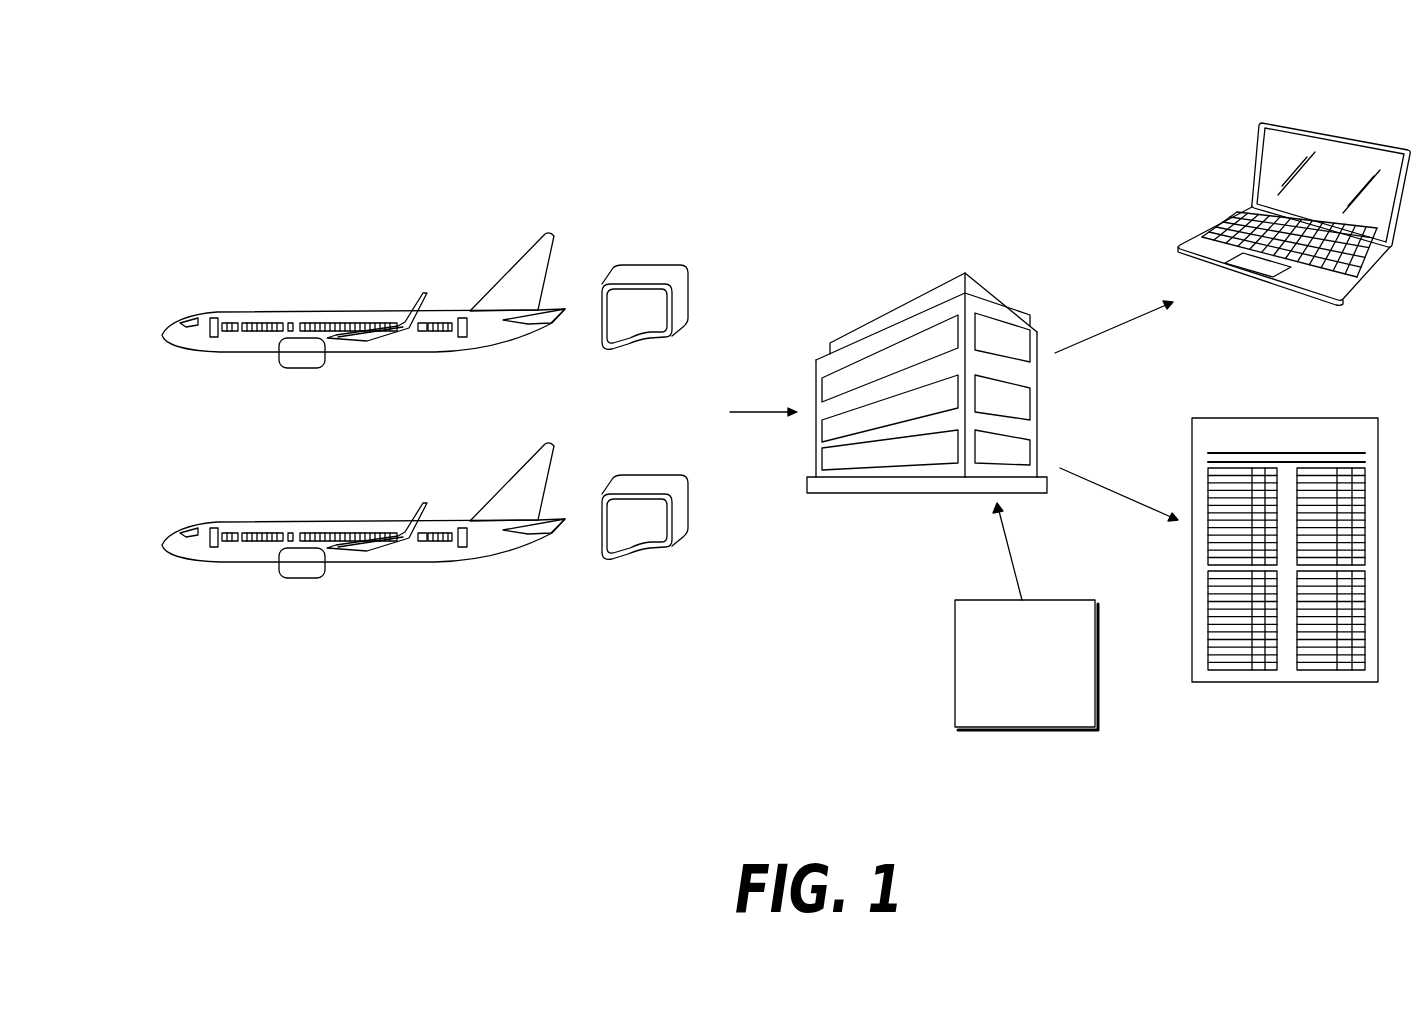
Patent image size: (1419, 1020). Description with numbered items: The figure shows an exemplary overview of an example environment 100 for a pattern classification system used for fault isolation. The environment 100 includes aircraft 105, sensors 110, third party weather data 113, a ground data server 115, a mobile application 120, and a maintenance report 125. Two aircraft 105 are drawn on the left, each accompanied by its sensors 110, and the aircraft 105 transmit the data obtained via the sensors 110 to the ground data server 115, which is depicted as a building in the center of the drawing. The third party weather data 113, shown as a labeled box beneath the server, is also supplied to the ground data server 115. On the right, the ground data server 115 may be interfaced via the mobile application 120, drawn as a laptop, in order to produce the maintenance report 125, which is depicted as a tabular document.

The environment 100 is at (702, 88).
The aircraft 105 is at (305, 578).
The sensors 110 is at (628, 558).
The third party weather data 113 is at (992, 727).
The ground data server 115 is at (925, 493).
The mobile application 120 is at (1330, 133).
The maintenance report 125 is at (1257, 682).